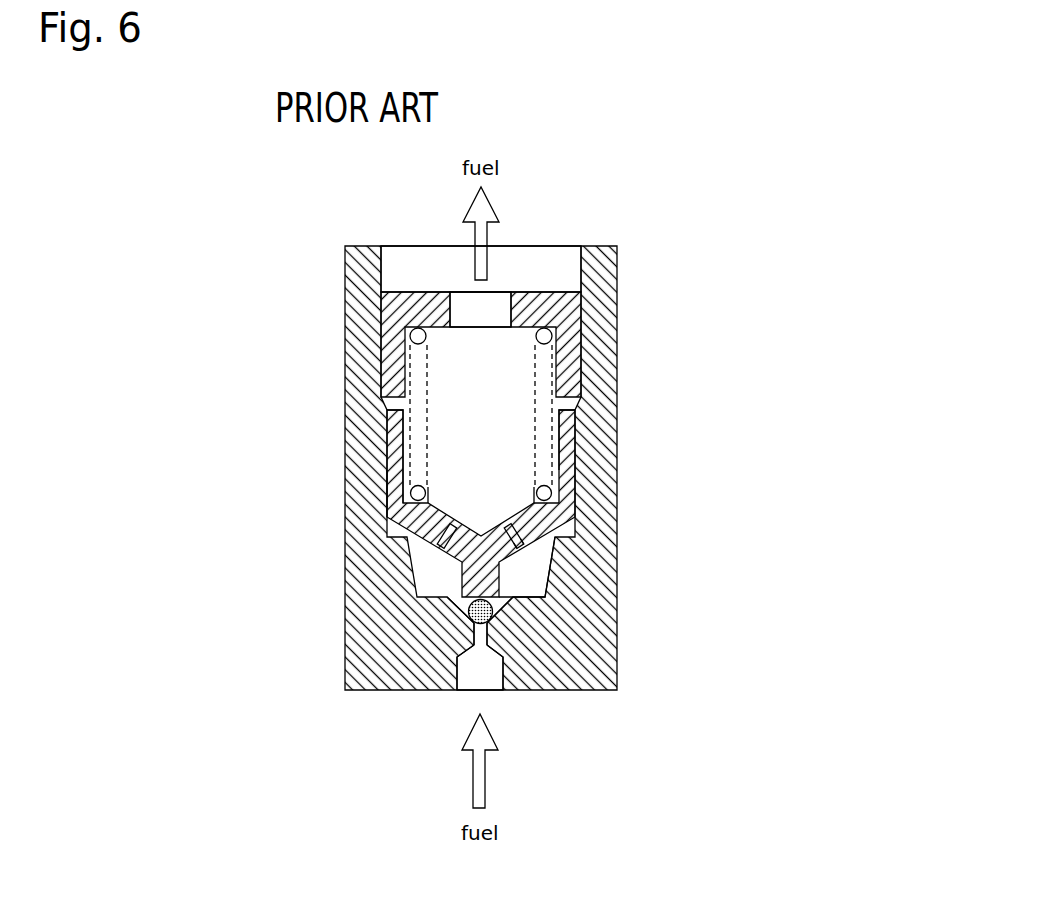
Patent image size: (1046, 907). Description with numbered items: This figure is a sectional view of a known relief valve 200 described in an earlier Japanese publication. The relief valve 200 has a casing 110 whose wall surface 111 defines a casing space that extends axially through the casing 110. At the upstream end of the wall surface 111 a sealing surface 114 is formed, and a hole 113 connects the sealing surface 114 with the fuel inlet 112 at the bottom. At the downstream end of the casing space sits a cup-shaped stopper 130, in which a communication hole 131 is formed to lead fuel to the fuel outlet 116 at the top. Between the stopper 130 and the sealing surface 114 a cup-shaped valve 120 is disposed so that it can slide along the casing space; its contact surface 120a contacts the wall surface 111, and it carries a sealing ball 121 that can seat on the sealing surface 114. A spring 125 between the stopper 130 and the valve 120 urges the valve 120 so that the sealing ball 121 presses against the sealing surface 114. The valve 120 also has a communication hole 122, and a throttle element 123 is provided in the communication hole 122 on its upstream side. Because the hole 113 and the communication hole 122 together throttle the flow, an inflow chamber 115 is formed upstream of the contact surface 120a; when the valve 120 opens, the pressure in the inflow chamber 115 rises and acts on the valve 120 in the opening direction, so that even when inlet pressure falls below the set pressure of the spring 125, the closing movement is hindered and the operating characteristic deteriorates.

The relief valve 200 is at (635, 210).
The casing 110 is at (595, 455).
The wall surface 111 is at (397, 465).
The fuel inlet 112 is at (480, 677).
The hole 113 is at (490, 634).
The sealing surface 114 is at (498, 605).
The inflow chamber 115 is at (535, 572).
The fuel outlet 116 is at (420, 276).
The valve 120 is at (568, 432).
The contact surface 120a is at (384, 430).
The sealing ball 121 is at (466, 613).
The communication hole 122 is at (517, 530).
The throttle element 123 is at (523, 548).
The spring 125 is at (420, 369).
The stopper 130 is at (556, 314).
The communication hole 131 is at (487, 302).